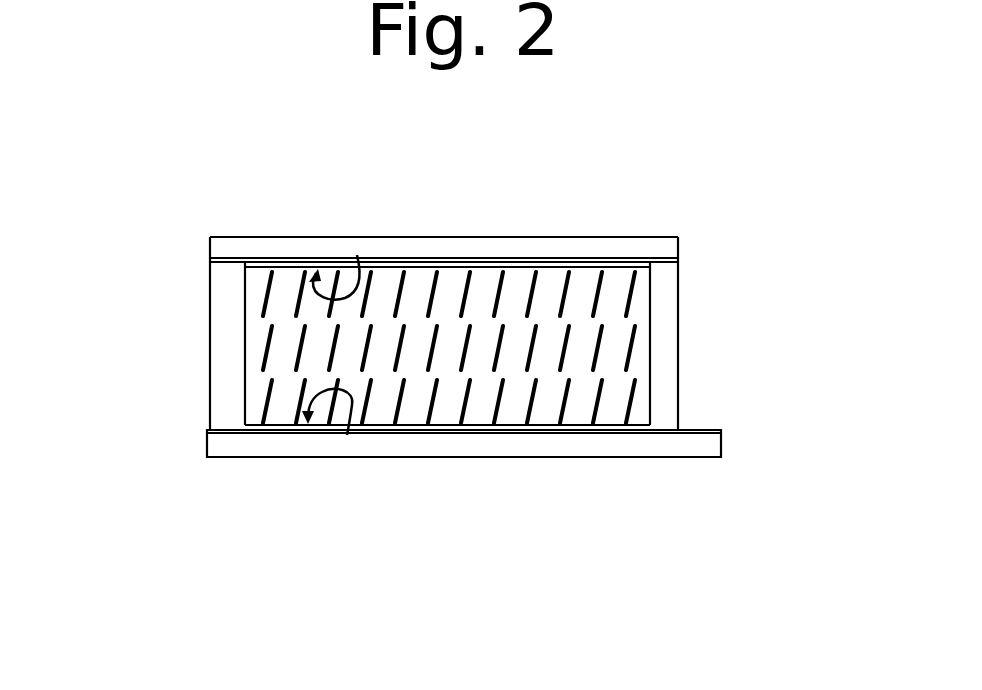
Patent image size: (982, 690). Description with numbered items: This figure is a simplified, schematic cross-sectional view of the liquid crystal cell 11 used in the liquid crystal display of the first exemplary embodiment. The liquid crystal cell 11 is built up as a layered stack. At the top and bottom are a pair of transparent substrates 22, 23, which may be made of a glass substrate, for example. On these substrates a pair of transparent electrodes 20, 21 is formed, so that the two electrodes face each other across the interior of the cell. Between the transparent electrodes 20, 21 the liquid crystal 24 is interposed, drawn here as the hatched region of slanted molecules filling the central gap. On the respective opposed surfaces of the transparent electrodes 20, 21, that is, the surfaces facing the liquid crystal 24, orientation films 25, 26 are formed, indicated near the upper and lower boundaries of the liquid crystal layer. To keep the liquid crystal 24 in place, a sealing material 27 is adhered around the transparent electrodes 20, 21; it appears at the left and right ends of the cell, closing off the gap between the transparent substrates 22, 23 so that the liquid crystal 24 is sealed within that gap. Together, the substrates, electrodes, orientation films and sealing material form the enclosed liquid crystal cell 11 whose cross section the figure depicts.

The liquid crystal cell 11 is at (167, 210).
The transparent electrode 20 is at (480, 266).
The transparent electrode 21 is at (458, 434).
The transparent substrate 22 is at (605, 246).
The transparent substrate 23 is at (620, 443).
The liquid crystal 24 is at (602, 336).
The orientation film 25 is at (357, 255).
The orientation film 26 is at (347, 435).
The sealing material 27 is at (222, 360).